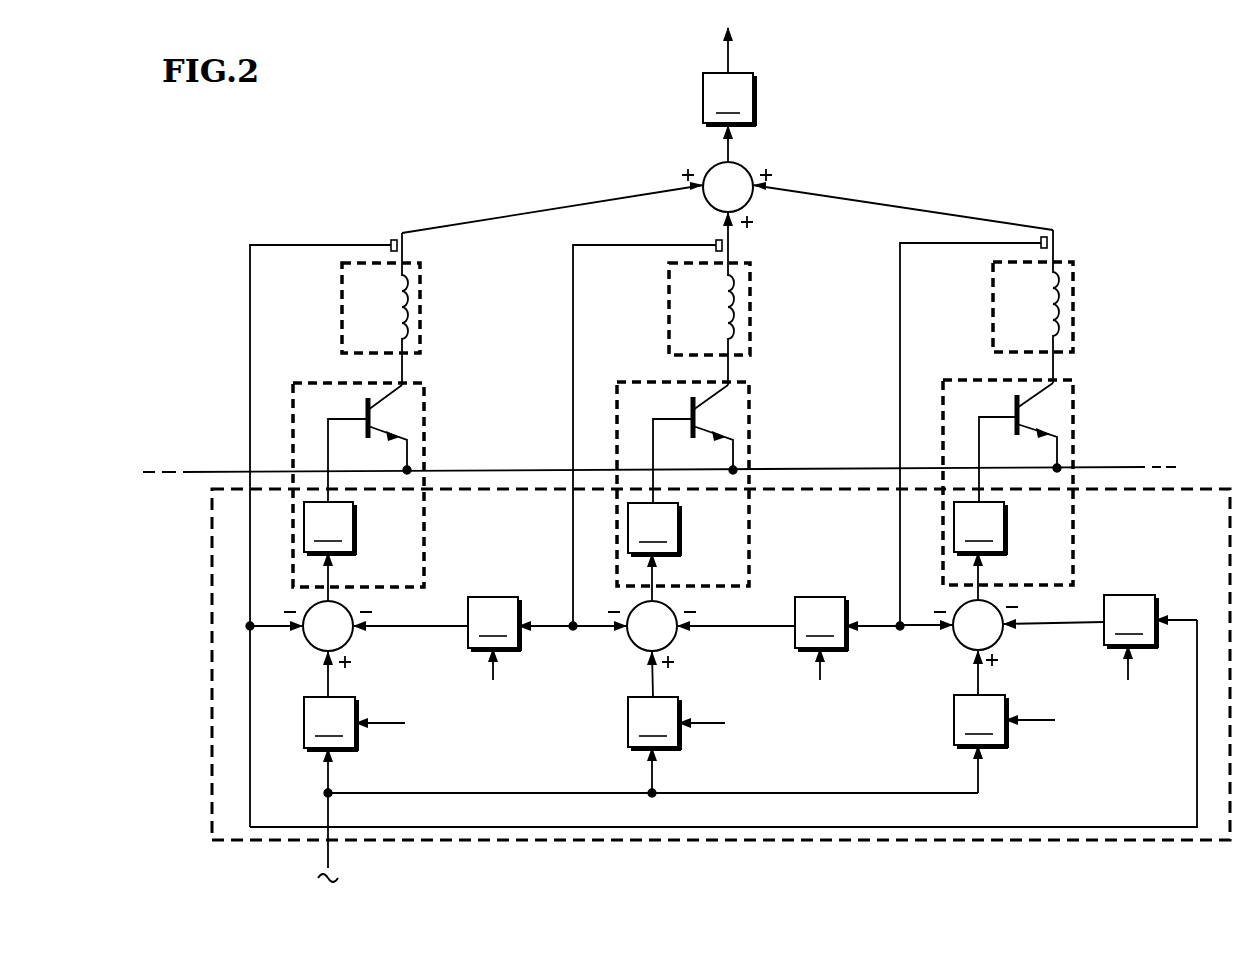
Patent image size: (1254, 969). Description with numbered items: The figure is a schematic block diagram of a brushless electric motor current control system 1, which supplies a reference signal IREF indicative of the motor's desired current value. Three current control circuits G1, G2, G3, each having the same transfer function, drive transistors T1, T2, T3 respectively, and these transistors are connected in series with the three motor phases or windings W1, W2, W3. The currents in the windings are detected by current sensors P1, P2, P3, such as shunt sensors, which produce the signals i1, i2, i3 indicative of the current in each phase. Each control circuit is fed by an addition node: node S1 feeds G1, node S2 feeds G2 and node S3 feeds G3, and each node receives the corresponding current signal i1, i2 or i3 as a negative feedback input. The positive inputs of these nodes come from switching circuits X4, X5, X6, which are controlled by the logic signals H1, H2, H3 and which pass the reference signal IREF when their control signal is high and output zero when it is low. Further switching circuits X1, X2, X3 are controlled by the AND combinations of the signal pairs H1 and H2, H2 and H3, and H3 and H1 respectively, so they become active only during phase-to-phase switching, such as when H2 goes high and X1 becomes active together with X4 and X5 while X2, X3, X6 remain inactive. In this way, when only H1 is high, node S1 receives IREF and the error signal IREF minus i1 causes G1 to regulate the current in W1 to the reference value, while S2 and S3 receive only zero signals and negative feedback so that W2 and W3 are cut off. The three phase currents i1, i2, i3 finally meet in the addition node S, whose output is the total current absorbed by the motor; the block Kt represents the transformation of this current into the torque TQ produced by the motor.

The control system 1 is at (1225, 487).
The current-to-torque transformation block Kt is at (729, 99).
The torque TQ is at (728, 58).
The addition node S is at (714, 164).
The current in phase W1 i1 is at (250, 322).
The current in phase W2 i2 is at (573, 322).
The current in phase W3 i3 is at (900, 322).
The current sensor P1 is at (393, 240).
The current sensor P2 is at (717, 240).
The current sensor P3 is at (1049, 236).
The phase winding W1 is at (381, 309).
The phase winding W2 is at (709, 323).
The phase winding W3 is at (1033, 306).
The transistor T1 is at (365, 408).
The transistor T2 is at (690, 408).
The transistor T3 is at (1014, 406).
The current control circuit G1 is at (330, 551).
The current control circuit G2 is at (654, 551).
The current control circuit G3 is at (980, 550).
The addition node S1 is at (313, 645).
The addition node S2 is at (637, 645).
The addition node S3 is at (963, 644).
The switching circuit X1 is at (517, 657).
The switching circuit X2 is at (844, 657).
The switching circuit X3 is at (1147, 655).
The switching circuit X4 is at (331, 745).
The switching circuit X5 is at (654, 745).
The switching circuit X6 is at (981, 744).
The logic control signal H1 is at (398, 724).
The logic control signal H2 is at (720, 724).
The logic control signal H3 is at (1046, 721).
The reference signal IREF is at (648, 839).